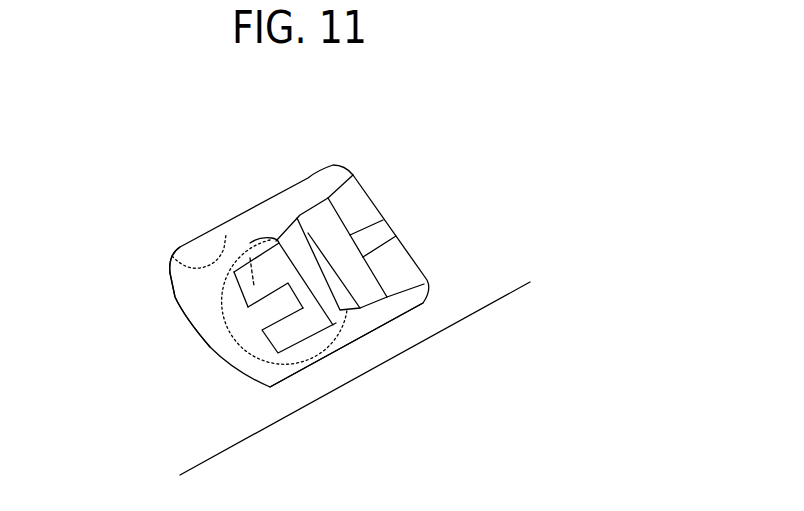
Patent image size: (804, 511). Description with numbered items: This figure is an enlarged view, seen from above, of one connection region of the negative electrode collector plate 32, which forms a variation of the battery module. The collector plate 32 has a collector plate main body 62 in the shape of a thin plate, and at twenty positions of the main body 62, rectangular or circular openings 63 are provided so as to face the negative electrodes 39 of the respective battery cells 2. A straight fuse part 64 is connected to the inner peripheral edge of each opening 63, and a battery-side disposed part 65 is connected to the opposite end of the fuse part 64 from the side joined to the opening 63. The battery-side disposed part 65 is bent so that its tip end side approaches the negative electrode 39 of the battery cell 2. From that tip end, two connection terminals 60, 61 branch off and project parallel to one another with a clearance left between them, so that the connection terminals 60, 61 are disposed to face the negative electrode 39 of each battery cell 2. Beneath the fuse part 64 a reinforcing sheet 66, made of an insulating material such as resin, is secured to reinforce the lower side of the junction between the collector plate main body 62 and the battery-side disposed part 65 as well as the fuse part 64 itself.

The battery cell 2 is at (270, 363).
The negative electrode collector plate 32 is at (500, 301).
The negative electrode 39 is at (259, 240).
The connection terminal 60 is at (250, 254).
The connection terminal 61 is at (300, 337).
The collector plate main body 62 is at (455, 300).
The opening 63 is at (172, 258).
The fuse part 64 is at (367, 228).
The battery-side disposed part 65 is at (365, 285).
The reinforcing sheet 66 is at (400, 257).